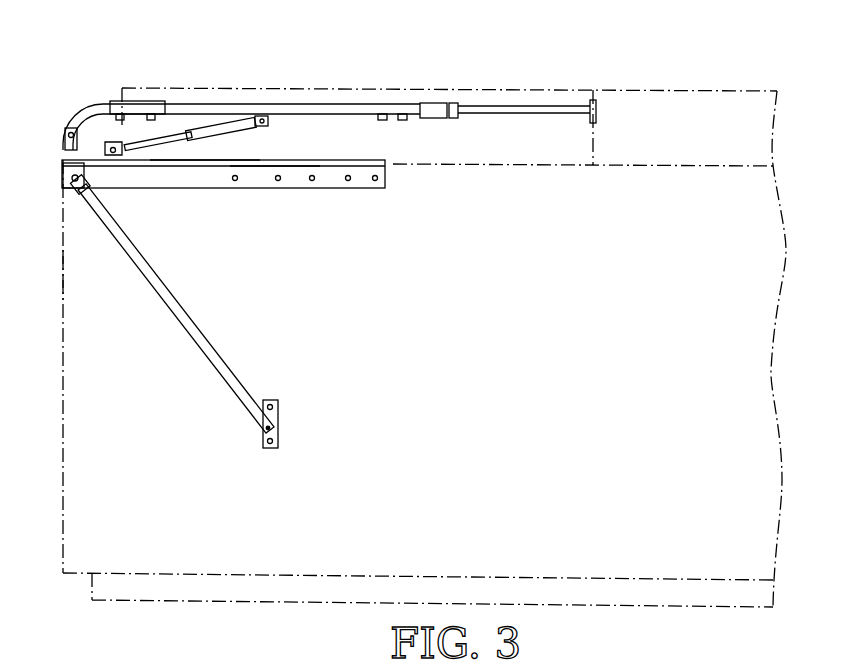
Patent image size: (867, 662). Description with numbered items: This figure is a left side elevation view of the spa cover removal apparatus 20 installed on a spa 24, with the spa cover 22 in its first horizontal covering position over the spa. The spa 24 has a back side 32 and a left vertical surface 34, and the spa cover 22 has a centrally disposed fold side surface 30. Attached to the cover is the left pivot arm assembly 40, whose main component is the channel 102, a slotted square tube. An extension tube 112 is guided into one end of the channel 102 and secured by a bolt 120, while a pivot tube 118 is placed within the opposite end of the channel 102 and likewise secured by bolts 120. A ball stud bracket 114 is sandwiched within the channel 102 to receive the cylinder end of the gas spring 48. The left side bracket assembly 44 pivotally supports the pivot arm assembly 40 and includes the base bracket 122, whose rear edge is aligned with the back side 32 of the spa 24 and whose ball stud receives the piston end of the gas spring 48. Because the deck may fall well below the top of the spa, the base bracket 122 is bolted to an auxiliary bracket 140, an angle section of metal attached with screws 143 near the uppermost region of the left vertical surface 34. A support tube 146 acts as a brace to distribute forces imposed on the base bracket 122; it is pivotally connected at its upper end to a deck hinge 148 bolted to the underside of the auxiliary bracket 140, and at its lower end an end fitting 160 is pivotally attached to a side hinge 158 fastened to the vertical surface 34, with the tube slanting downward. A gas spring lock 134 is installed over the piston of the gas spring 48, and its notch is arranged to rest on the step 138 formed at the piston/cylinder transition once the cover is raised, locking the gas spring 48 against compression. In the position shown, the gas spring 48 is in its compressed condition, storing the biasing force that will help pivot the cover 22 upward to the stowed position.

The spa cover removal apparatus 20 is at (66, 78).
The spa cover 22 is at (304, 86).
The spa 24 is at (792, 124).
The fold side surface 30 is at (604, 146).
The back side 32 is at (58, 324).
The left vertical surface 34 is at (498, 428).
The left pivot arm assembly 40 is at (474, 72).
The left side bracket assembly 44 is at (54, 265).
The gas spring 48 is at (207, 166).
The channel 102 is at (398, 103).
The extension tube 112 is at (552, 104).
The ball stud bracket 114 is at (270, 168).
The pivot tube 118 is at (93, 98).
The bolt 120 is at (165, 100).
The base bracket 122 is at (66, 136).
The gas spring lock 134 is at (140, 166).
The step 138 is at (195, 128).
The auxiliary bracket 140 is at (382, 190).
The screws 143 is at (348, 181).
The support tube 146 is at (208, 360).
The deck hinge 148 is at (58, 184).
The side hinge 158 is at (279, 407).
The end fitting 160 is at (279, 430).